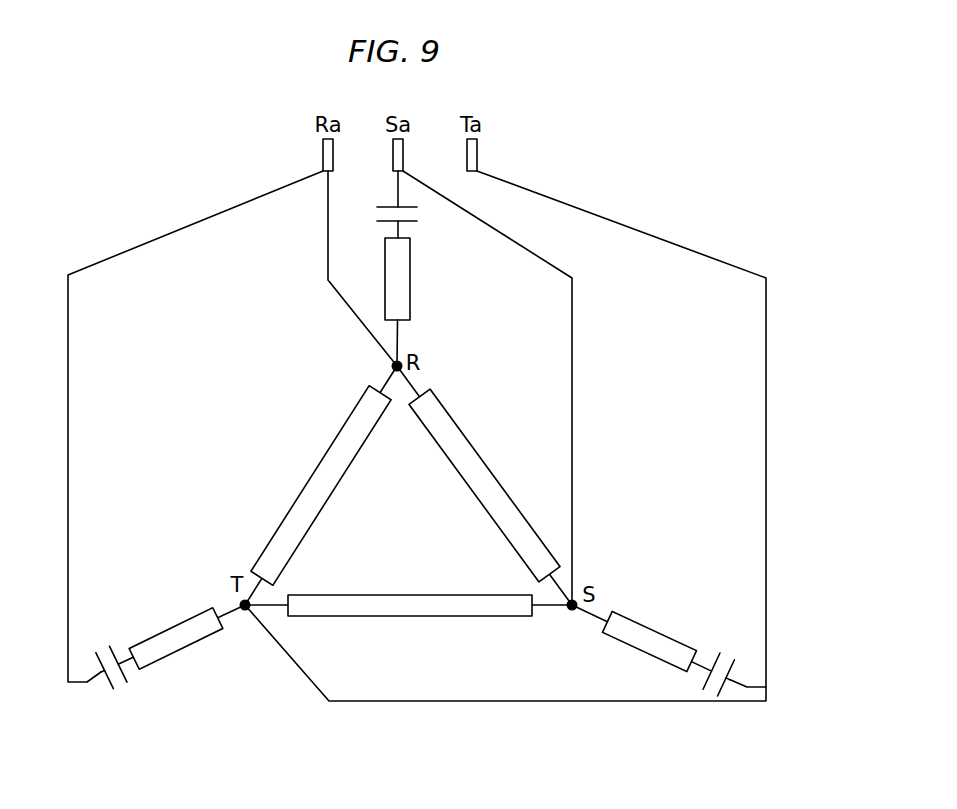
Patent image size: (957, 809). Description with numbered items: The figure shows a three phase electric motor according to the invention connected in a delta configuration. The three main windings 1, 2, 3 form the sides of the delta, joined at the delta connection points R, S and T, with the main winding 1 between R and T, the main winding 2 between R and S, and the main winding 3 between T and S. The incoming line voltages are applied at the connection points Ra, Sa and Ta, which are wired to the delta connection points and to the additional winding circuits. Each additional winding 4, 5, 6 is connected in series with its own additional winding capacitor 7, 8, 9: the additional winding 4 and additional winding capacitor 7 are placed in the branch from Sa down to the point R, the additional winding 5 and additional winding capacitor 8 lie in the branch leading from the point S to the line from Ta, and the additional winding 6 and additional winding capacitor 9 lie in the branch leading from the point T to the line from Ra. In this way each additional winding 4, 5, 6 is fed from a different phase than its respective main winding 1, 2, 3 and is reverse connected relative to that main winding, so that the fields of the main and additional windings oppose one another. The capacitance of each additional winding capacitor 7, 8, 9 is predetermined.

The main winding 1 is at (321, 485).
The main winding 2 is at (484, 485).
The main winding 3 is at (408, 622).
The additional winding 4 is at (413, 302).
The additional winding 5 is at (642, 637).
The additional winding 6 is at (181, 636).
The additional winding capacitor 7 is at (380, 204).
The additional winding capacitor 8 is at (728, 664).
The additional winding capacitor 9 is at (102, 659).